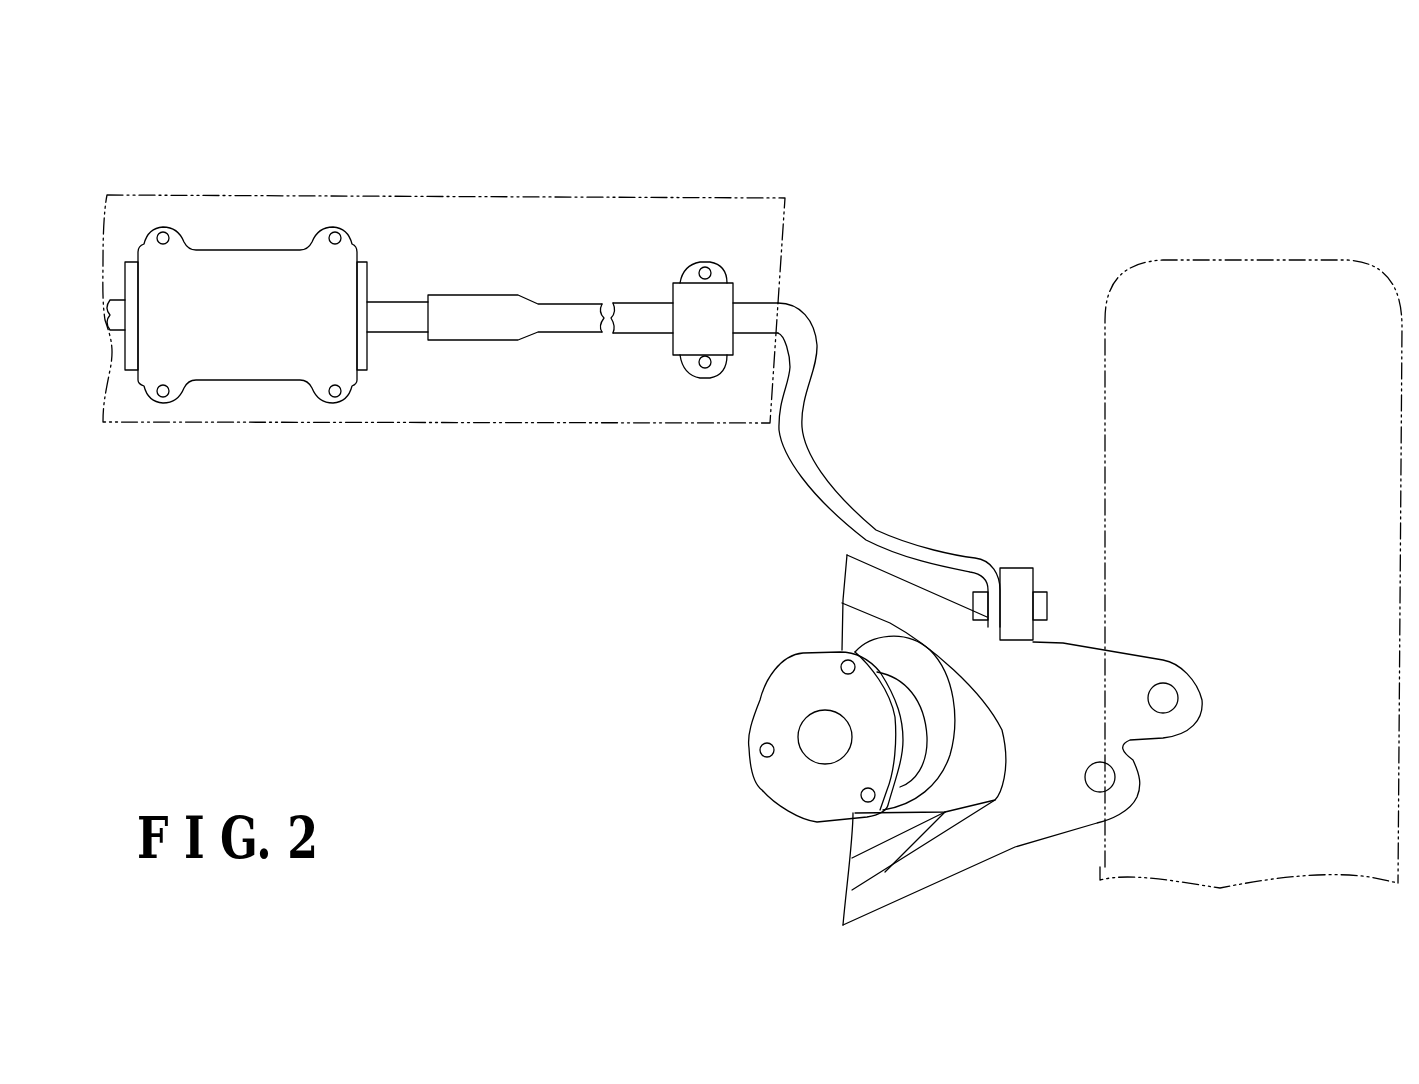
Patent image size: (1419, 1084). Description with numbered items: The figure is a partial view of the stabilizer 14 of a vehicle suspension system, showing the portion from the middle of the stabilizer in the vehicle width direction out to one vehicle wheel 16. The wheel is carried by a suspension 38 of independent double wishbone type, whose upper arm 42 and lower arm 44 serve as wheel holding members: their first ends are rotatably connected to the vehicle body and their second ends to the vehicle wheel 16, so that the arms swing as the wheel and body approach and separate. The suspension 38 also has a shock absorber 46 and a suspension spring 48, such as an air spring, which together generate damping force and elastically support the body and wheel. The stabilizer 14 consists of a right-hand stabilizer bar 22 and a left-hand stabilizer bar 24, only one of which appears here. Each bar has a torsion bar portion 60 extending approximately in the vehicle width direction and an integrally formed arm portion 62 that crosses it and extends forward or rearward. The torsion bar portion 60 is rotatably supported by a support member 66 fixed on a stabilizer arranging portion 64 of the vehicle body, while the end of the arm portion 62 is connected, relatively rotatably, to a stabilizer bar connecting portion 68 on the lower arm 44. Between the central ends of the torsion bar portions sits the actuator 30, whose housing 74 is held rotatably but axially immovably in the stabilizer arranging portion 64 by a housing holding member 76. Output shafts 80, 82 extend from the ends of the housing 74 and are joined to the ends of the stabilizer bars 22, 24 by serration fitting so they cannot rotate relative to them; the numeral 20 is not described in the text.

The stabilizer 14 is at (822, 128).
The vehicle wheel 16 is at (1203, 267).
The brake cable 20 is at (538, 247).
The right-hand stabilizer bar 22 is at (694, 279).
The left-hand stabilizer bar 24 is at (623, 283).
The actuator 30 is at (247, 325).
The suspension 38 is at (889, 748).
The upper arm 42 is at (1032, 827).
The lower arm 44 is at (1107, 667).
The shock absorber 46 is at (779, 842).
The suspension spring 48 is at (850, 860).
The torsion bar portion 60 is at (560, 313).
The arm portion 62 is at (843, 483).
The stabilizer arranging portion 64 is at (448, 393).
The support member 66 is at (723, 288).
The stabilizer bar connecting portion 68 is at (1028, 577).
The housing 74 is at (365, 373).
The housing holding member 76 is at (245, 373).
The output shaft 80 is at (408, 310).
The output shaft 82 is at (120, 298).